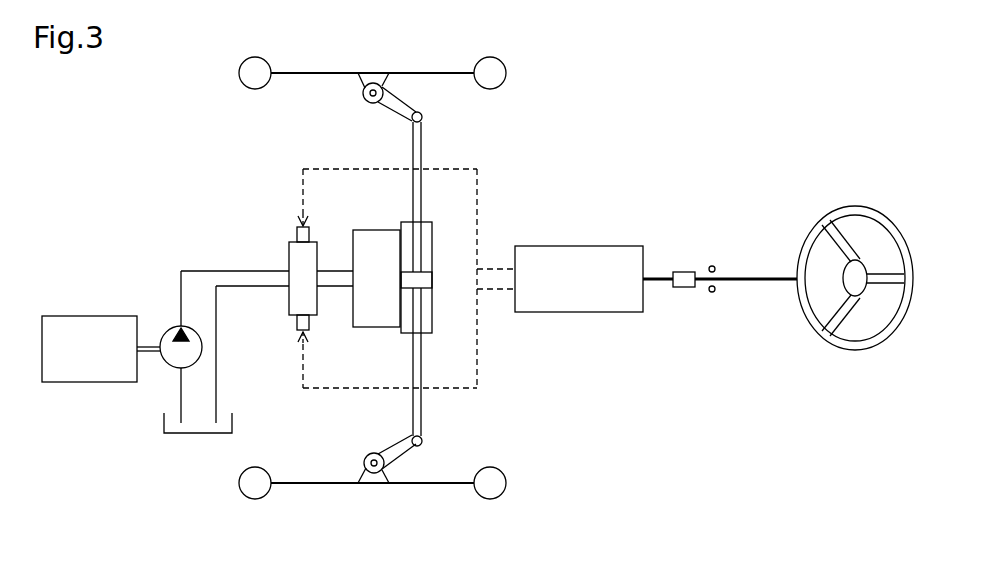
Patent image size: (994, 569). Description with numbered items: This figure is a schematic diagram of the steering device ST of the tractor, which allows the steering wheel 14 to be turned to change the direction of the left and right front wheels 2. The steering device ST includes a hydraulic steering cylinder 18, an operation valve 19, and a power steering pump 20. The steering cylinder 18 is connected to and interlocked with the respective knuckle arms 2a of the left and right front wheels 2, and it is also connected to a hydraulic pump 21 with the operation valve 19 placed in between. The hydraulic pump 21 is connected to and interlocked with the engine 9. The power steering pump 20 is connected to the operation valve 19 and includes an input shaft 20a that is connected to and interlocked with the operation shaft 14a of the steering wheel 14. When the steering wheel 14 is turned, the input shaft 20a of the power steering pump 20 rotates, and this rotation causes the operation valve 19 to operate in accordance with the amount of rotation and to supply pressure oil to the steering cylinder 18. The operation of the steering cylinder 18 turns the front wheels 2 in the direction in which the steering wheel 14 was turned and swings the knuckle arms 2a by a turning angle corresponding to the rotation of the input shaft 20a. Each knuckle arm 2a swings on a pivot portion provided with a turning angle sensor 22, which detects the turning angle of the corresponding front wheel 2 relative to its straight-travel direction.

The front wheels 2 is at (314, 73).
The turning angle sensor 22 is at (373, 84).
The knuckle arms 2a is at (392, 113).
The steering cylinder 18 is at (432, 305).
The operation valve 19 is at (288, 303).
The hydraulic pump 21 is at (165, 366).
The engine 9 is at (90, 316).
The power steering pump 20 is at (578, 312).
The input shaft 20a is at (663, 272).
The operation shaft 14a is at (748, 272).
The steering wheel 14 is at (855, 350).
The steering device ST is at (250, 186).